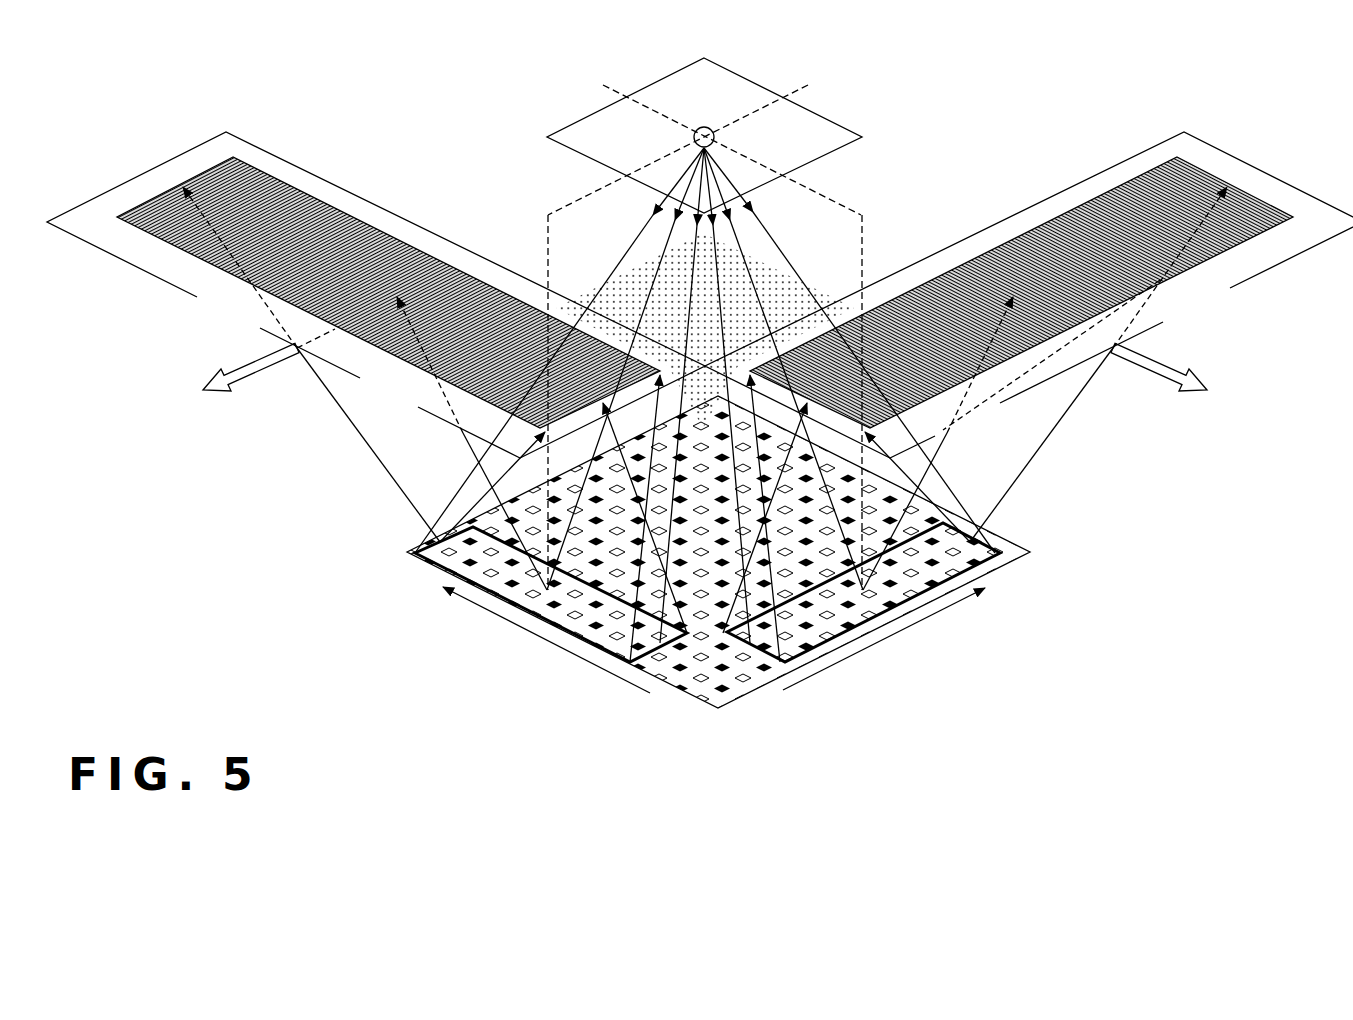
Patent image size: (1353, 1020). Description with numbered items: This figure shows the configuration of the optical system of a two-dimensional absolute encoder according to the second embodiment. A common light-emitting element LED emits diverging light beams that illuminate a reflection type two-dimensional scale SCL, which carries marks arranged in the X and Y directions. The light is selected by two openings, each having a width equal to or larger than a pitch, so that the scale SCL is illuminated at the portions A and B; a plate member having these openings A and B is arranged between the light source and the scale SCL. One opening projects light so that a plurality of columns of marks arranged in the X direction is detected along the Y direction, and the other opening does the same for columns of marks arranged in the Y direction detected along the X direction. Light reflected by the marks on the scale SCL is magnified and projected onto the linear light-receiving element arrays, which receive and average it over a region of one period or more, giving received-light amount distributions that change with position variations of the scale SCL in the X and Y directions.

The light-emitting element LED is at (705, 350).
The two-dimensional scale SCL is at (718, 562).
The illuminated portion A is at (768, 666).
The illuminated portion B is at (430, 546).
The X direction X is at (890, 639).
The Y direction Y is at (533, 639).